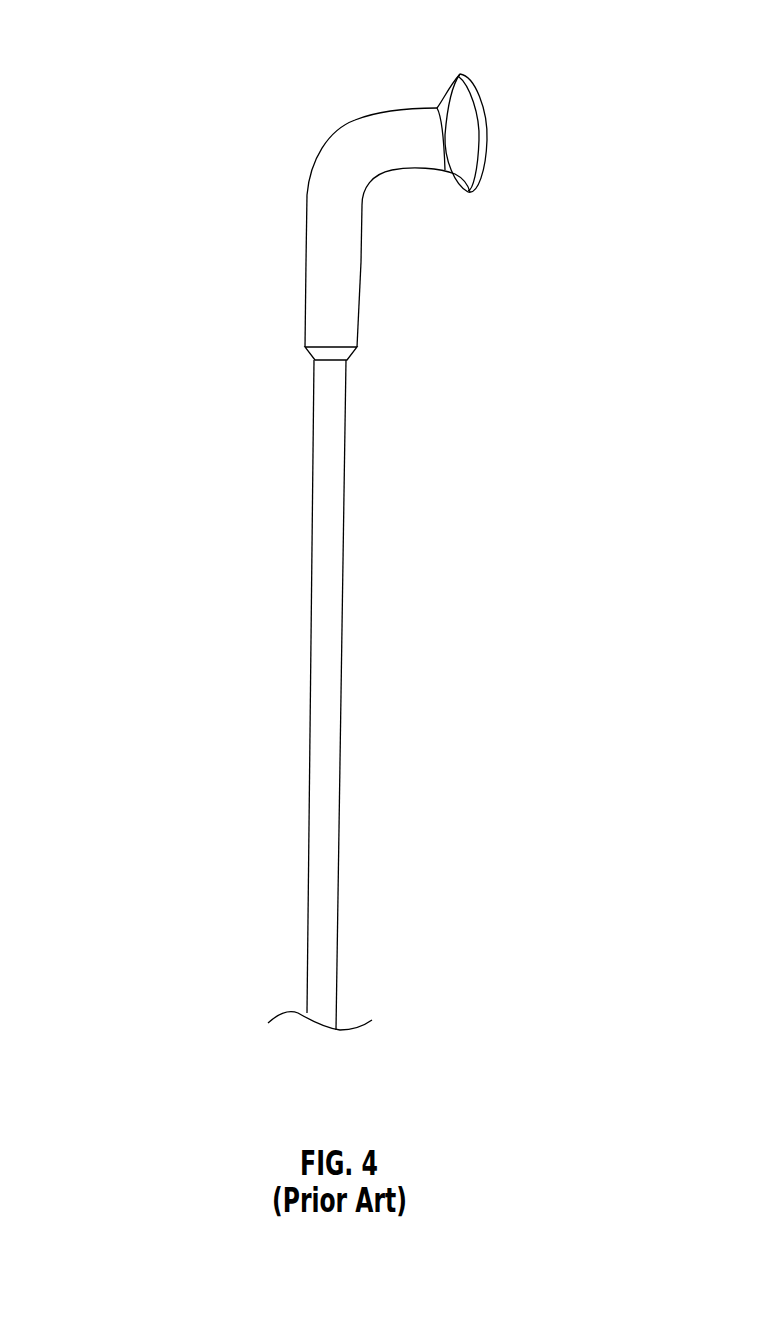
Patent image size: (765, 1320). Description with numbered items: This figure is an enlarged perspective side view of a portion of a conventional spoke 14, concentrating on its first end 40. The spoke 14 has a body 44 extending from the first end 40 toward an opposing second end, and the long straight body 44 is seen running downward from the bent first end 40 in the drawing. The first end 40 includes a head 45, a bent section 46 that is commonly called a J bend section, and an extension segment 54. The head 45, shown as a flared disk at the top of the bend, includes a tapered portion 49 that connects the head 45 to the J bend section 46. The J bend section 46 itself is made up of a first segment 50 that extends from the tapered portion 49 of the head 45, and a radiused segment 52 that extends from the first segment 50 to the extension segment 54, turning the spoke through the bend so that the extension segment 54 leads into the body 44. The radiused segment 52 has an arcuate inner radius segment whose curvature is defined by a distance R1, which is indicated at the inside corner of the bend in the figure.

The spoke 14 is at (182, 47).
The first end 40 is at (550, 74).
The body 44 is at (265, 380).
The head 45 is at (478, 96).
The bent section 46 is at (262, 105).
The tapered portion 49 is at (470, 192).
The first segment 50 is at (427, 55).
The radiused segment 52 is at (473, 230).
The extension segment 54 is at (257, 260).
The distance R1 is at (373, 191).